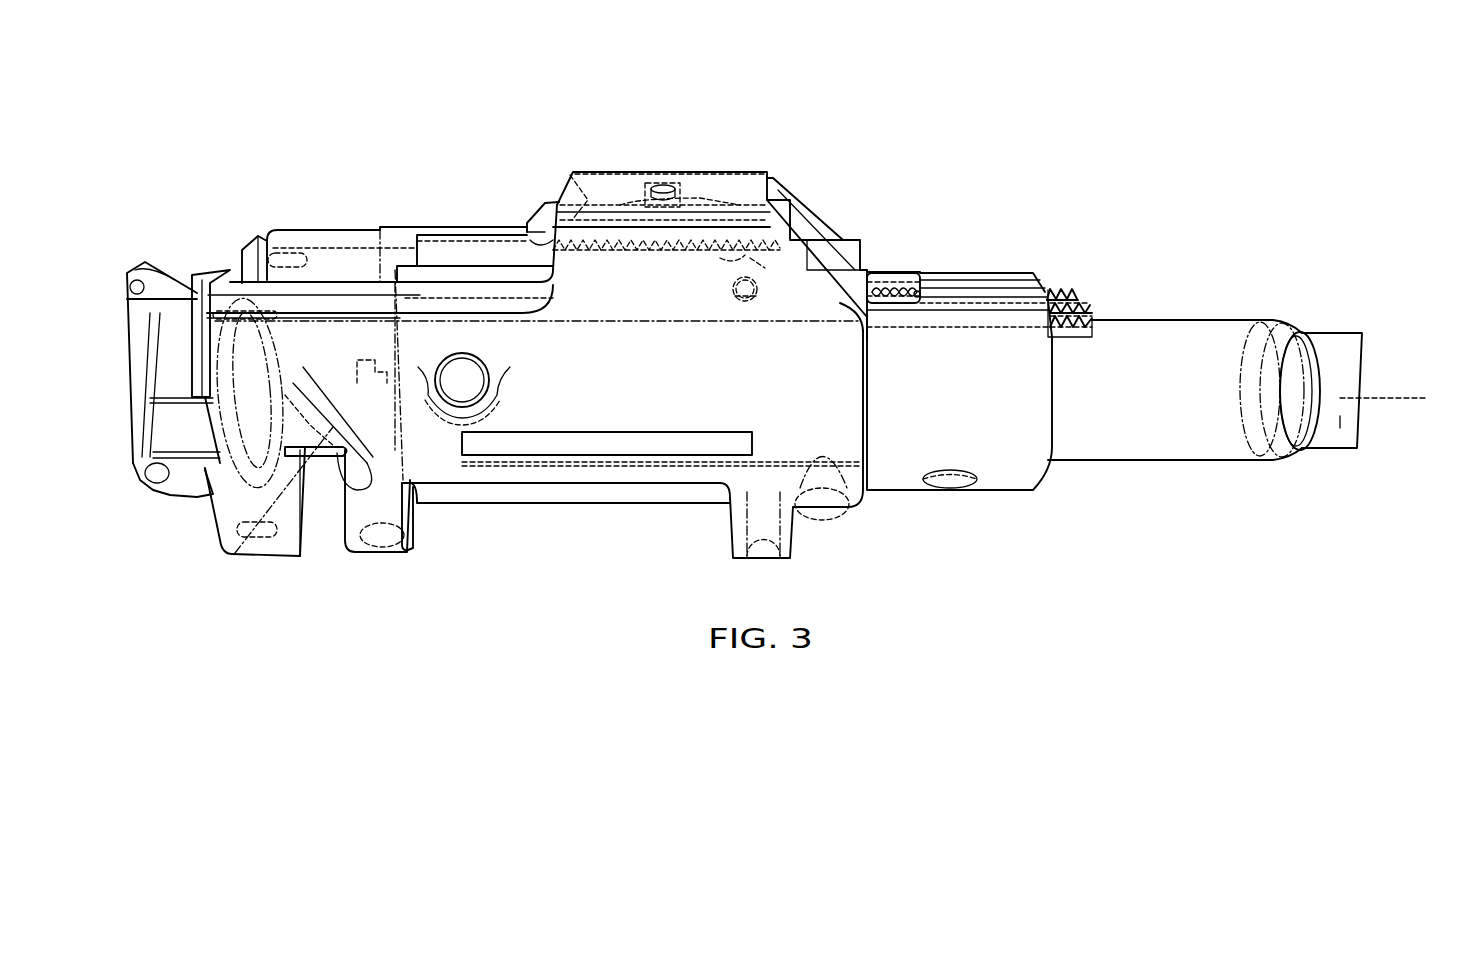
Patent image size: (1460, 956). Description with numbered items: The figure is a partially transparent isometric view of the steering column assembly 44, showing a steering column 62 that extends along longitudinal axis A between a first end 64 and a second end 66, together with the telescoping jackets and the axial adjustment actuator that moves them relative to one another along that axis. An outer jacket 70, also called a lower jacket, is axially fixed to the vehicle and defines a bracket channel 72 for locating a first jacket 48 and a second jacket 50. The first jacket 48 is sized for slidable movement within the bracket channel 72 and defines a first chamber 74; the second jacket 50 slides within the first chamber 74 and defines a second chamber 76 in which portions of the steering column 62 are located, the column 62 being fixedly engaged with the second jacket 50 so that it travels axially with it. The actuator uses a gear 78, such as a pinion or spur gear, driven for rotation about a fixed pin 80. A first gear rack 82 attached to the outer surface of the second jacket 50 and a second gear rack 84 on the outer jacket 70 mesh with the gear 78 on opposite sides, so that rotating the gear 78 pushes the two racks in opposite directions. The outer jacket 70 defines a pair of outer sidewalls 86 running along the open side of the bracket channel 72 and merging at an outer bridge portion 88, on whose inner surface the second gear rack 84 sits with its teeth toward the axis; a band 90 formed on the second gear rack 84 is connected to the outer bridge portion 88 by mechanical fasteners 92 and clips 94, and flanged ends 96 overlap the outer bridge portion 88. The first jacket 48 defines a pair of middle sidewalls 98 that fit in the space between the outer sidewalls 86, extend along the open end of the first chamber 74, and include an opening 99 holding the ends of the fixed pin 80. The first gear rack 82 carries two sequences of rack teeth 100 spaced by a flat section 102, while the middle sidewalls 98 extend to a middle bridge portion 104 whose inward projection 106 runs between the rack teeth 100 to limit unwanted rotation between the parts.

The steering column assembly 44 is at (1165, 170).
The first jacket 48 is at (951, 273).
The second jacket 50 is at (1155, 313).
The steering column 62 is at (1365, 372).
The first end 64 is at (137, 344).
The second end 66 is at (1357, 333).
The outer jacket 70 is at (380, 218).
The bracket channel 72 is at (320, 265).
The first chamber 74 is at (1053, 420).
The second chamber 76 is at (1340, 416).
The gear 78 is at (760, 260).
The fixed pin 80 is at (747, 287).
The first gear rack 82 is at (1078, 291).
The second gear rack 84 is at (540, 205).
The outer sidewalls 86 is at (398, 233).
The outer bridge portion 88 is at (727, 178).
The band 90 is at (612, 207).
The mechanical fasteners 92 is at (663, 183).
The clips 94 is at (580, 200).
The flanged ends 96 is at (772, 177).
The middle sidewalls 98 is at (860, 270).
The opening 99 is at (735, 295).
The rack teeth 100 is at (1053, 293).
The flat section 102 is at (1087, 315).
The middle bridge portion 104 is at (1013, 278).
The inward projection 106 is at (923, 300).